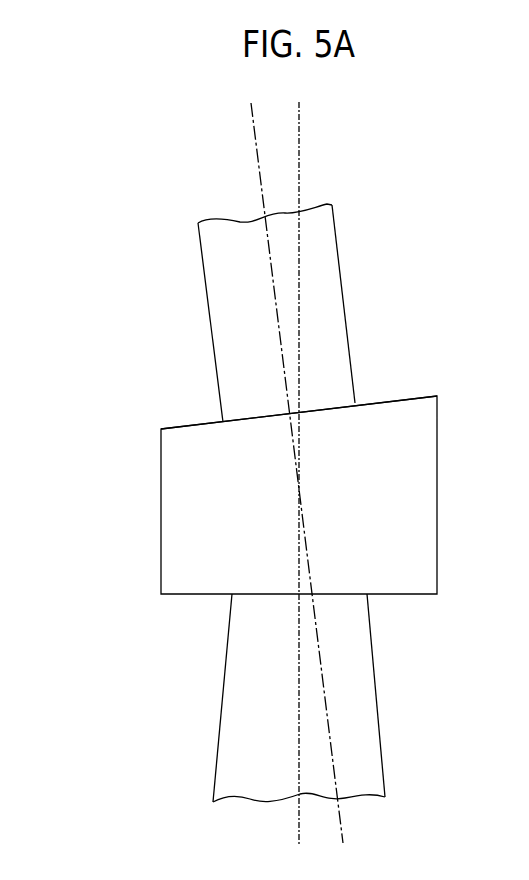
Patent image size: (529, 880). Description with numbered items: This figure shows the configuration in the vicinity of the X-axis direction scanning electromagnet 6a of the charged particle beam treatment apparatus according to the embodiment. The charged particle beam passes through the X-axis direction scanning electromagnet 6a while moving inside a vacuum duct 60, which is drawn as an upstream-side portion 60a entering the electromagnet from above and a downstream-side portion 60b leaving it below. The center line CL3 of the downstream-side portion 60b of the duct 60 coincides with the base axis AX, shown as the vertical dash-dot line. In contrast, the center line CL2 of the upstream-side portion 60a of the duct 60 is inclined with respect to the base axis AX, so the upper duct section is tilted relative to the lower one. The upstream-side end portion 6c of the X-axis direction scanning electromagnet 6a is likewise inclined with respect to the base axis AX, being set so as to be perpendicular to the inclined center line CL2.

The X-axis direction scanning electromagnet 6a is at (161, 509).
The upstream-side end portion 6c is at (395, 399).
The vacuum duct 60 is at (256, 503).
The upstream-side portion 60a is at (213, 362).
The downstream-side portion 60b is at (226, 661).
The center line CL2 is at (258, 158).
The base axis AX is at (298, 748).
The center line CL3 is at (198, 473).